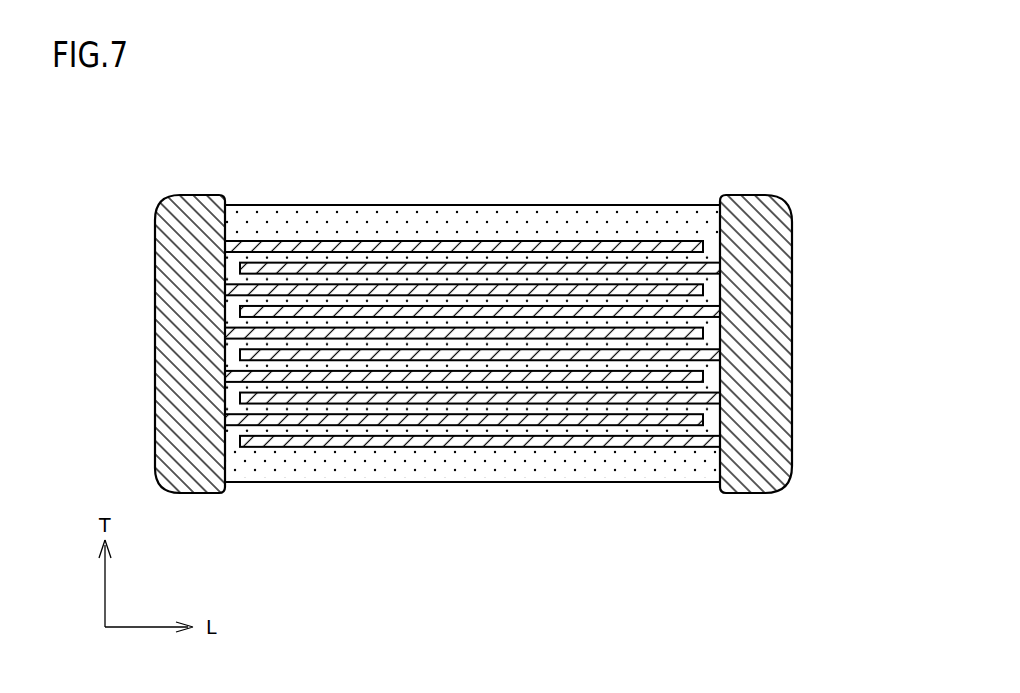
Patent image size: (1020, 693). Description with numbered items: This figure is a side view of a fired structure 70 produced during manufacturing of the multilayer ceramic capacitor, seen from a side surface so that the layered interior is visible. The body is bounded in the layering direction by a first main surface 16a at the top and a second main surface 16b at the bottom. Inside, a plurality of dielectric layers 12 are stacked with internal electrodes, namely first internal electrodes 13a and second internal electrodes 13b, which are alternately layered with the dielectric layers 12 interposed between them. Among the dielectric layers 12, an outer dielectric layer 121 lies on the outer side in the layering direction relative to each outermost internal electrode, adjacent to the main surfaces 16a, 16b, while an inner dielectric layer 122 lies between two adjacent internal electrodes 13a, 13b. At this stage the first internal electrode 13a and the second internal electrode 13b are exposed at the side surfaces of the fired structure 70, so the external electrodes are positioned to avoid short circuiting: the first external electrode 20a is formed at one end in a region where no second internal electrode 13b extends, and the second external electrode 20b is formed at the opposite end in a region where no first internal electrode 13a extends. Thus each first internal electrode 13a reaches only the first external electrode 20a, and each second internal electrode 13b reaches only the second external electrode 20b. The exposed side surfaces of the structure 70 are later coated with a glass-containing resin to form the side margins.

The fired structure 70 is at (469, 327).
The dielectric layer 12 is at (472, 329).
The outer dielectric layer 121 is at (383, 227).
The inner dielectric layer 122 is at (517, 285).
The first internal electrode 13a is at (585, 287).
The second internal electrode 13b is at (550, 393).
The first main surface 16a is at (323, 205).
The second main surface 16b is at (343, 482).
The first external electrode 20a is at (153, 325).
The second external electrode 20b is at (792, 288).